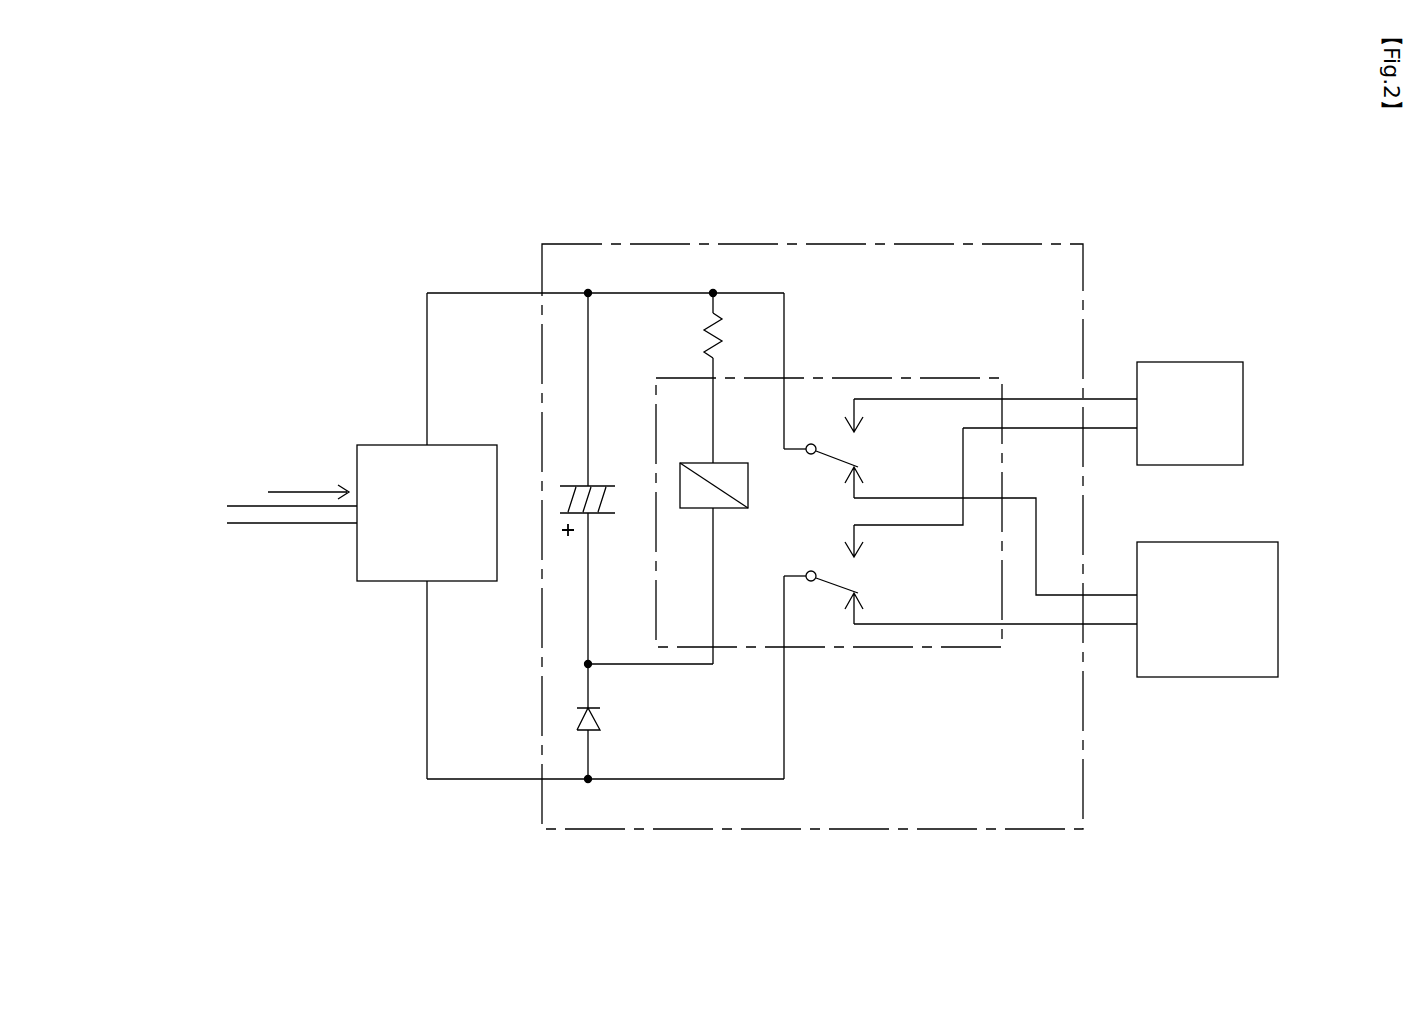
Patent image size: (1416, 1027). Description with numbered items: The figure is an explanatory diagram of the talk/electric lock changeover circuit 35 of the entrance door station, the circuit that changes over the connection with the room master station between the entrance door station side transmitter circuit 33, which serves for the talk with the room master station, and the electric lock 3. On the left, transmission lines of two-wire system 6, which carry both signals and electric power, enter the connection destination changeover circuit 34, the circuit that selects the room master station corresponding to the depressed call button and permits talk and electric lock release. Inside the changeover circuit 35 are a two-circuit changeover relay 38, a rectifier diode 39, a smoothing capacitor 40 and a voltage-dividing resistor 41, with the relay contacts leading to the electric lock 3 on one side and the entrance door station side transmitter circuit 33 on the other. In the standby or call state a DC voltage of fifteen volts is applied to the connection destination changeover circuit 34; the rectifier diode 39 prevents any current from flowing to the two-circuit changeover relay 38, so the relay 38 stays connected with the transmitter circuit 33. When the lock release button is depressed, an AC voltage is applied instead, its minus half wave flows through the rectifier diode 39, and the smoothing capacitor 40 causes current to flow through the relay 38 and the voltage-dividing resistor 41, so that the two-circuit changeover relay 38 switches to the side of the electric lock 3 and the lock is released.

The talk/electric lock changeover circuit 35 is at (1025, 244).
The two-circuit changeover relay 38 is at (824, 378).
The voltage-dividing resistor 41 is at (703, 320).
The smoothing capacitor 40 is at (604, 486).
The rectifier diode 39 is at (600, 715).
The connection destination changeover circuit 34 is at (390, 445).
The electric lock 3 is at (1186, 362).
The entrance door station side transmitter circuit 33 is at (1182, 677).
The transmission lines of two-wire system 6 is at (227, 523).